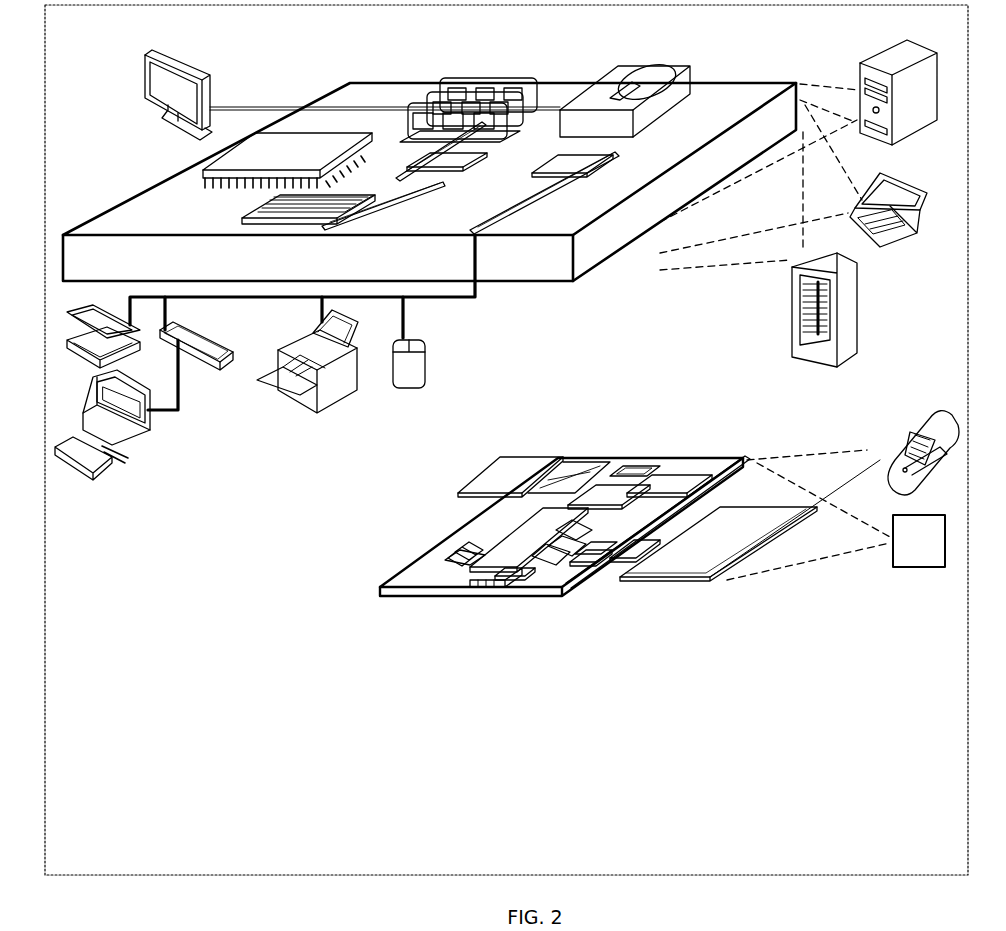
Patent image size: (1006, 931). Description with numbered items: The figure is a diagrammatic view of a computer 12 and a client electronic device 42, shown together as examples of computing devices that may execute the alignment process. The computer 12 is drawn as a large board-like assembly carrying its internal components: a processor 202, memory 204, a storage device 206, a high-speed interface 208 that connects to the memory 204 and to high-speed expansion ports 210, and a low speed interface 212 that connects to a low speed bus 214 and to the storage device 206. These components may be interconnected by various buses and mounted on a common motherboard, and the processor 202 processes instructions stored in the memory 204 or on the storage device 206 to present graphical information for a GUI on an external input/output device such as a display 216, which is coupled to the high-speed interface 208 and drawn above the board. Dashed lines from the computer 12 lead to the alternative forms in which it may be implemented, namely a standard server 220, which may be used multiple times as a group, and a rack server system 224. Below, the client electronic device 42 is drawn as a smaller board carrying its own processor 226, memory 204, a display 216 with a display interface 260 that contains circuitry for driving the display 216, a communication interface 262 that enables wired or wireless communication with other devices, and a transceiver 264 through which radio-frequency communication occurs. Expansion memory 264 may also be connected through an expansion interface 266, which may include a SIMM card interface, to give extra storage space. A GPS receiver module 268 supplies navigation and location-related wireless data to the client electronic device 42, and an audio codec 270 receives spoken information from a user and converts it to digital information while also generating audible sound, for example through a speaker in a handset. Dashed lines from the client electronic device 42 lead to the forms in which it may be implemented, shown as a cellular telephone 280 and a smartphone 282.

The computer 12 is at (297, 60).
The client electronic device 42 is at (543, 438).
The processor 202 is at (205, 170).
The memory 204 is at (454, 77).
The storage device 206 is at (626, 68).
The high-speed interface 208 is at (393, 145).
The high-speed expansion ports 210 is at (253, 210).
The low speed interface 212 is at (568, 152).
The low speed bus 214 is at (478, 236).
The display 216 is at (141, 54).
The standard server 220 is at (856, 64).
The rack server system 224 is at (788, 320).
The processor 226 is at (506, 579).
The display interface 260 is at (603, 577).
The communication interface 262 is at (592, 478).
The transceiver 264 is at (486, 471).
The expansion interface 266 is at (536, 474).
The GPS receiver module 268 is at (630, 470).
The audio codec 270 is at (625, 566).
The cellular telephone 280 is at (924, 417).
The smartphone 282 is at (905, 516).